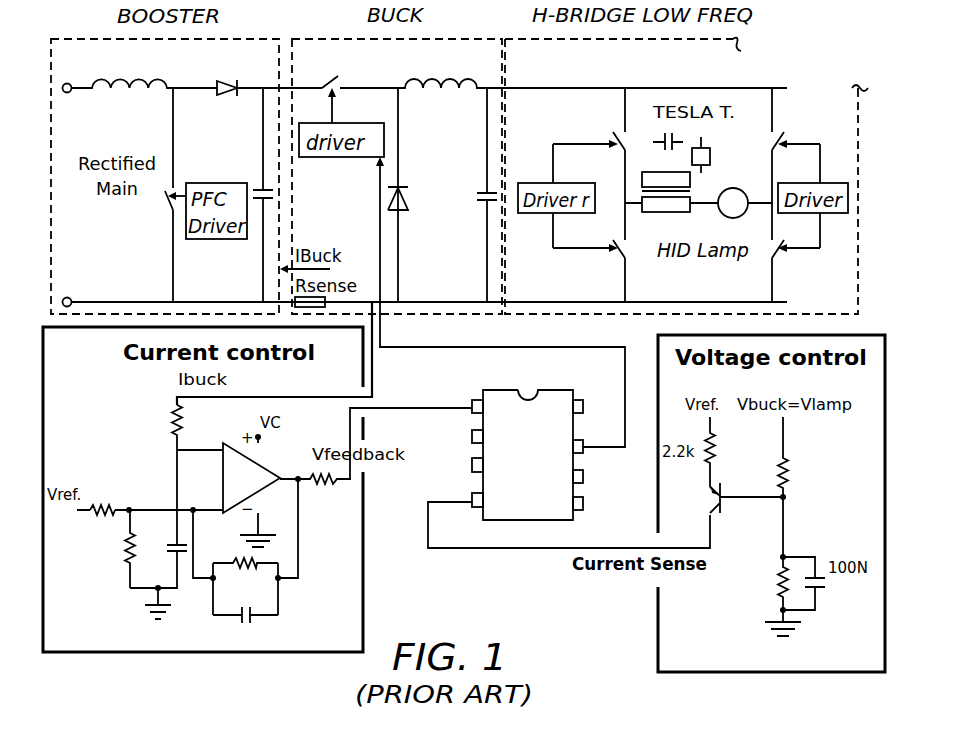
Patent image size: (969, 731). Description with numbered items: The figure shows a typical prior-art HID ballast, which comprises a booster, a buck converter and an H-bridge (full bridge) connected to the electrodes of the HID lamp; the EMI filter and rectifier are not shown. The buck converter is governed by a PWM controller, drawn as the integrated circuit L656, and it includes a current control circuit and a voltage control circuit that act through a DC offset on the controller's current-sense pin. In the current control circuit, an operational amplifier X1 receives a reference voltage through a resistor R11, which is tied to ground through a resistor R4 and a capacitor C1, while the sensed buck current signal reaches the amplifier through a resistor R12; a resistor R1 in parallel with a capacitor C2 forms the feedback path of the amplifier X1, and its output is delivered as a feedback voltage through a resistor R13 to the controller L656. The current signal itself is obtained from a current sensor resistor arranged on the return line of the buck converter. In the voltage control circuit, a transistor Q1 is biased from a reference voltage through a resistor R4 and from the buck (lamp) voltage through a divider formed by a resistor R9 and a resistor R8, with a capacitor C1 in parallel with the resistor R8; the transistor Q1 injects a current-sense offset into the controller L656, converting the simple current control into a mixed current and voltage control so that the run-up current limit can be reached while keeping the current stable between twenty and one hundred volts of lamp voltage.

The resistor R12 is at (197, 427).
The resistor R11 is at (108, 499).
The resistor R4 is at (421, 502).
The capacitor C1 is at (500, 560).
The resistor R1 is at (245, 586).
The capacitor C2 is at (245, 627).
The operational amplifier X1 is at (256, 478).
The resistor R13 is at (376, 461).
The L656 controller IC L656 is at (531, 455).
The transistor Q1 is at (728, 498).
The resistor R9 is at (792, 487).
The resistor R8 is at (764, 589).